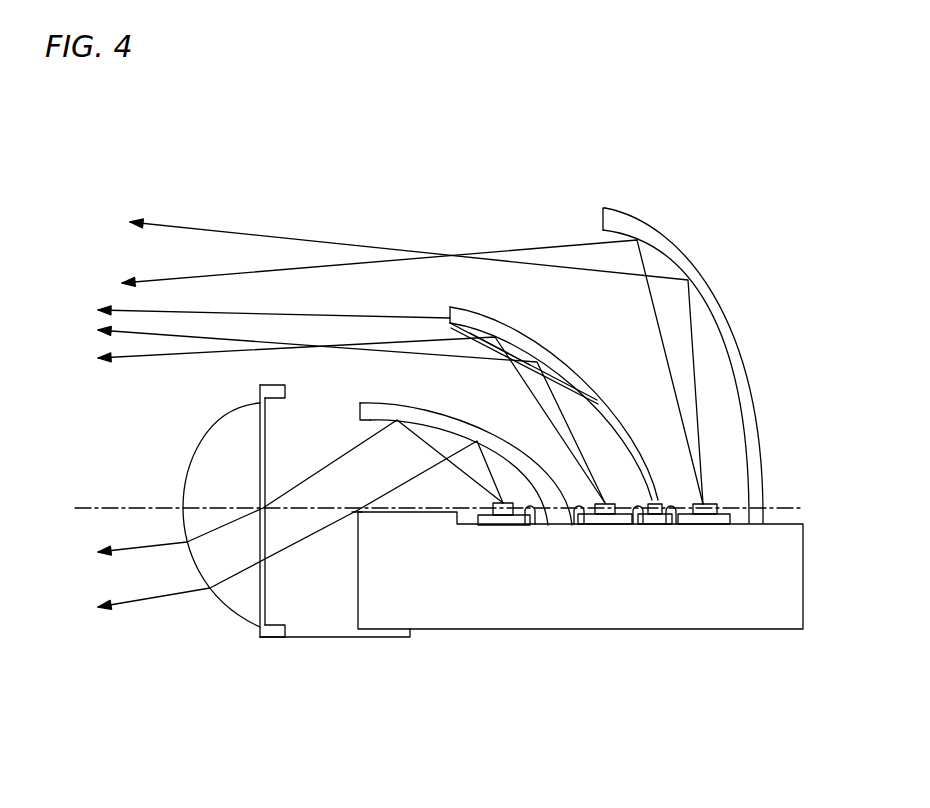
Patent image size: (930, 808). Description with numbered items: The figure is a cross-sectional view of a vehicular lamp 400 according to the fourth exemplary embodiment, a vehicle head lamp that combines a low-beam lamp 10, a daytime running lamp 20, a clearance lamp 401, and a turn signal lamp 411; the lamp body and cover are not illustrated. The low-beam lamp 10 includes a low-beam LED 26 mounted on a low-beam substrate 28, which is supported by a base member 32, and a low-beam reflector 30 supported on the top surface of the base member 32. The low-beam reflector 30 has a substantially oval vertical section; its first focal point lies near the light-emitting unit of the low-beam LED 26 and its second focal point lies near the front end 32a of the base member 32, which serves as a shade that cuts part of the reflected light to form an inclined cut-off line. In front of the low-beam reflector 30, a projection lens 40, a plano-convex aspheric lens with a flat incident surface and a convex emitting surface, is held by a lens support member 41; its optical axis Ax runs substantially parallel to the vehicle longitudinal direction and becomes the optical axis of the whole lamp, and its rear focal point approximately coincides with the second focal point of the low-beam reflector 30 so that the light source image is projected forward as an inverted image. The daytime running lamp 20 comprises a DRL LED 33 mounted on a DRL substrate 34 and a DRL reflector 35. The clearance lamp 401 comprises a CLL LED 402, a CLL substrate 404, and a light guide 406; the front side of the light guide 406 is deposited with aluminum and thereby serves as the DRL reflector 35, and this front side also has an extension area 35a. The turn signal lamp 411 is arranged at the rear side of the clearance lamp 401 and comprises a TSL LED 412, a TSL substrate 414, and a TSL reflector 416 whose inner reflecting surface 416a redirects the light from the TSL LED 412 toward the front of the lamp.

The vehicular lamp 400 is at (360, 160).
The low-beam lamp 10 is at (205, 420).
The daytime running lamp 20 is at (465, 385).
The low-beam LED 26 is at (492, 500).
The low-beam substrate 28 is at (531, 524).
The low-beam reflector 30 is at (363, 422).
The base member 32 is at (790, 522).
The front end of the base member 32a is at (357, 508).
The DRL LED 33 is at (608, 504).
The DRL substrate 34 is at (576, 527).
The DRL reflector 35 is at (592, 404).
The extension area 35a is at (500, 352).
The projection lens 40 is at (198, 448).
The lens support member 41 is at (332, 640).
The clearance lamp 401 is at (437, 305).
The CLL LED 402 is at (638, 524).
The CLL substrate 404 is at (673, 524).
The light guide 406 is at (573, 366).
The turn signal lamp 411 is at (573, 222).
The TSL LED 412 is at (705, 504).
The TSL substrate 414 is at (660, 507).
The TSL reflector 416 is at (737, 318).
The reflecting surface of fourth reflector 416a is at (655, 258).
The optical axis Ax is at (75, 508).